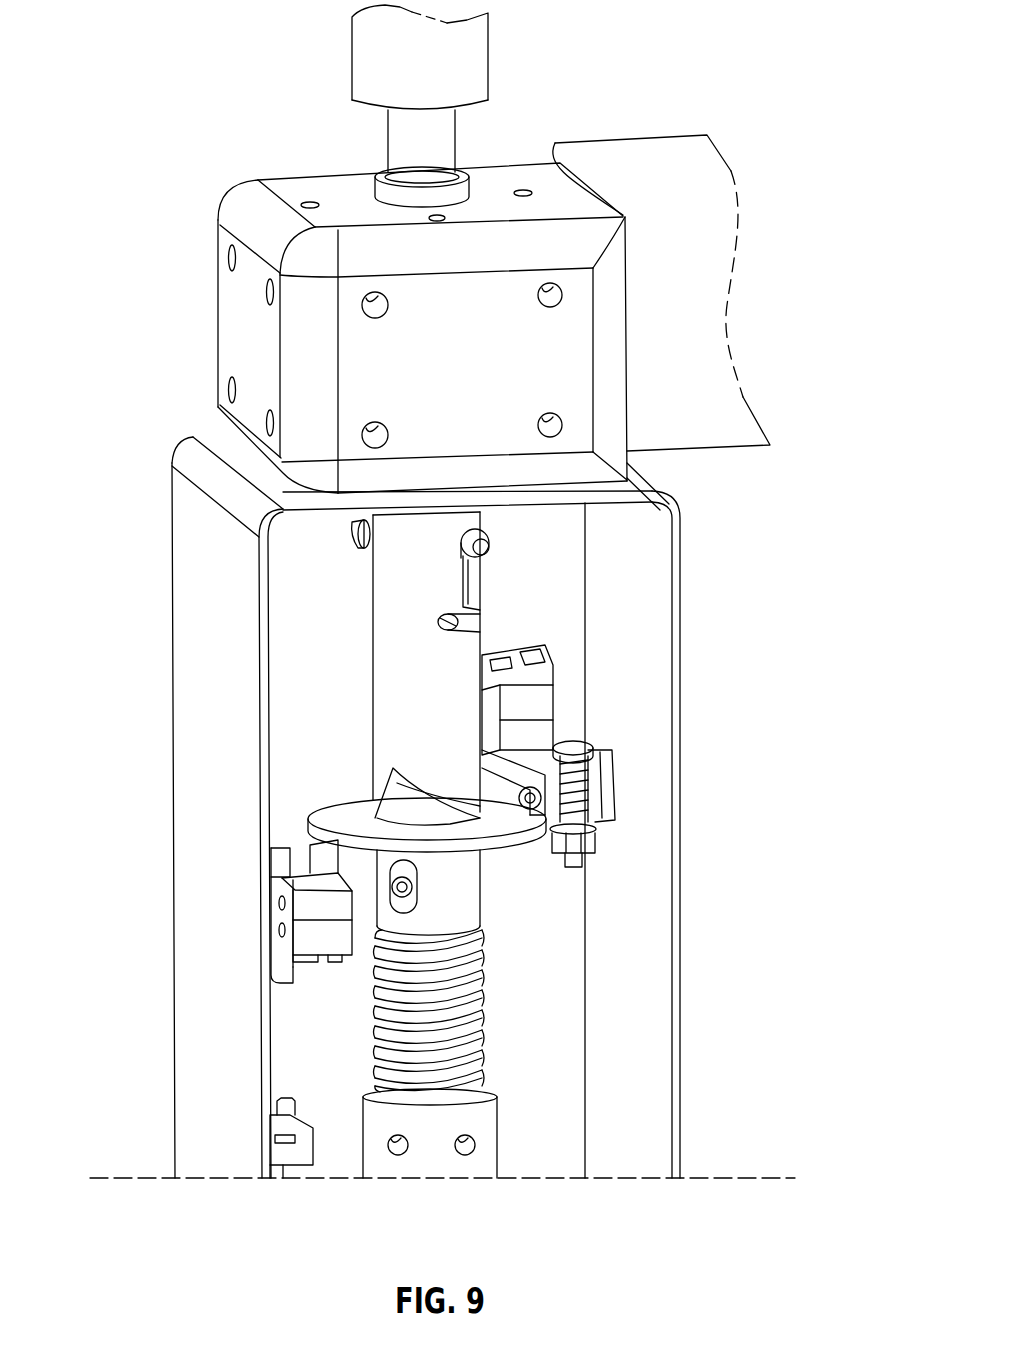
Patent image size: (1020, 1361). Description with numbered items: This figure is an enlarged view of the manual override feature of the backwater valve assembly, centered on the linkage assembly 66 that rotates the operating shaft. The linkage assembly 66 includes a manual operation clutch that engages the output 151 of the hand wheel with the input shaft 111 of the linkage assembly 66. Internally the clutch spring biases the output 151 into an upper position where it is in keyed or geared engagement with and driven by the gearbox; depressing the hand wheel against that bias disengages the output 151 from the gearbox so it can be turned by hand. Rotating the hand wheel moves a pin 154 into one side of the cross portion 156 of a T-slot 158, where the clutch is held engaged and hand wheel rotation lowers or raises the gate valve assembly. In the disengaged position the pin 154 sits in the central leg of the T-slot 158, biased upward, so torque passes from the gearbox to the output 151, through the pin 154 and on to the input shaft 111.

The output 151 is at (428, 141).
The pin 154 is at (489, 551).
The T-slot 158 is at (472, 578).
The cross portion 156 is at (437, 632).
The input shaft 111 is at (390, 718).
The linkage assembly 66 is at (327, 1020).